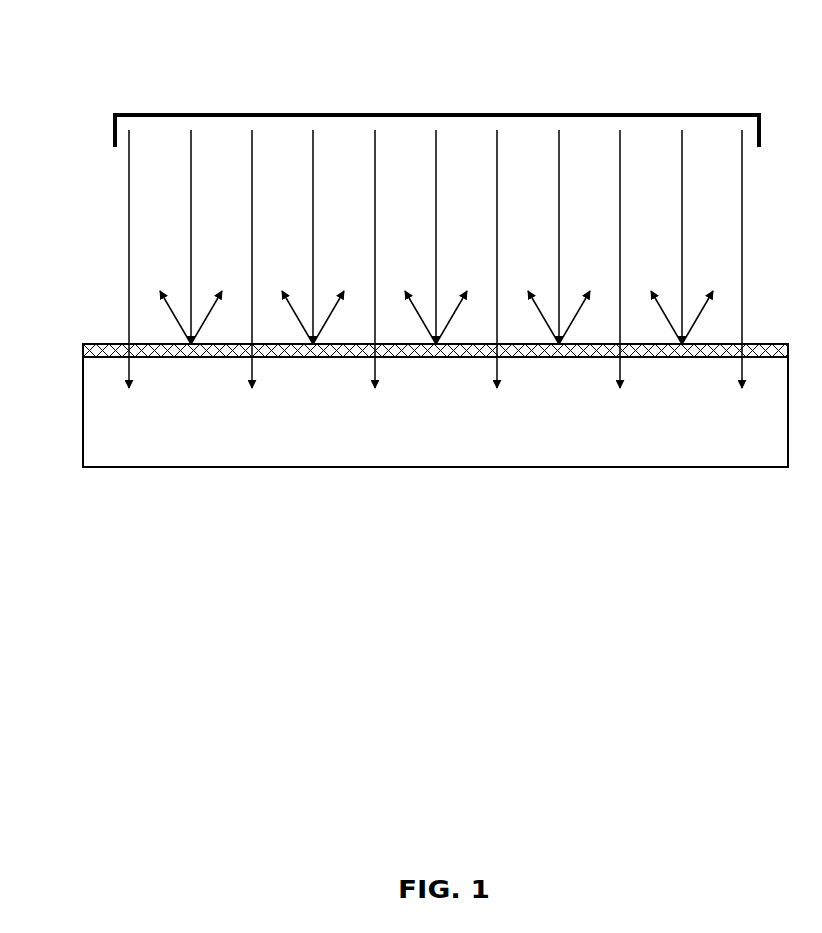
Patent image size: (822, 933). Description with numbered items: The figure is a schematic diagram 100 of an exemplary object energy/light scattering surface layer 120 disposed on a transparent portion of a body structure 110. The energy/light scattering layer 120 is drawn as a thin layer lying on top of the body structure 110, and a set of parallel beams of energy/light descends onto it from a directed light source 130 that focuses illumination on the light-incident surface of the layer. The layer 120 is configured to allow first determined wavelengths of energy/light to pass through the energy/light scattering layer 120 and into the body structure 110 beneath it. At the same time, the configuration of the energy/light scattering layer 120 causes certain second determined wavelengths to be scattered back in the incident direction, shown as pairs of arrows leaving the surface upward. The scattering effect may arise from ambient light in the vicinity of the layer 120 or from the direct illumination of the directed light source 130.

The schematic diagram 100 is at (78, 42).
The body structure 110 is at (435, 412).
The energy/light scattering surface layer 120 is at (83, 352).
The directed light source 130 is at (436, 113).